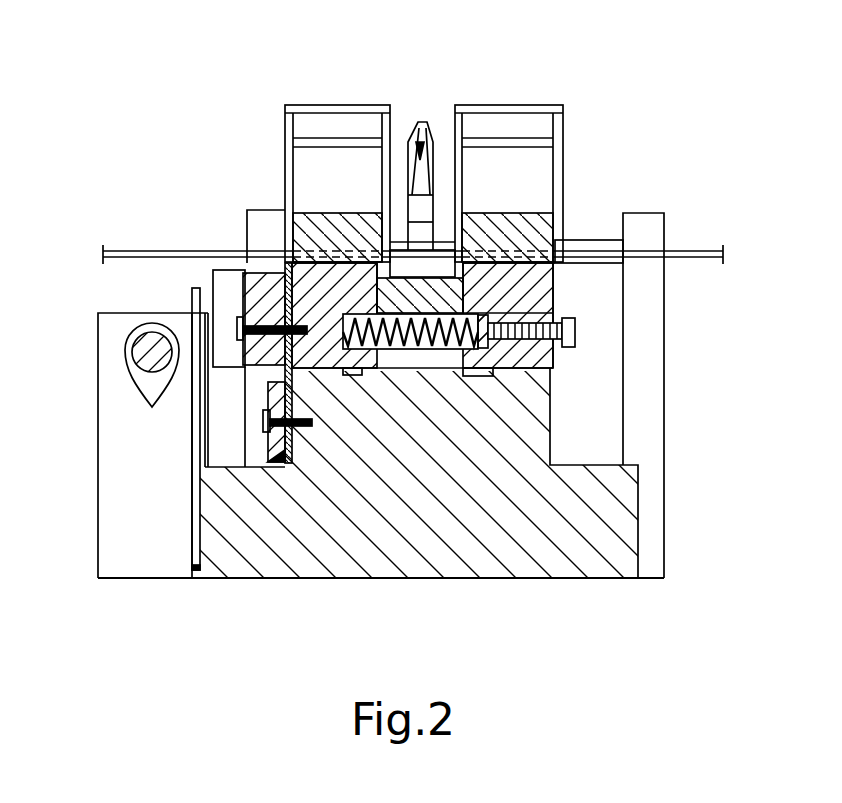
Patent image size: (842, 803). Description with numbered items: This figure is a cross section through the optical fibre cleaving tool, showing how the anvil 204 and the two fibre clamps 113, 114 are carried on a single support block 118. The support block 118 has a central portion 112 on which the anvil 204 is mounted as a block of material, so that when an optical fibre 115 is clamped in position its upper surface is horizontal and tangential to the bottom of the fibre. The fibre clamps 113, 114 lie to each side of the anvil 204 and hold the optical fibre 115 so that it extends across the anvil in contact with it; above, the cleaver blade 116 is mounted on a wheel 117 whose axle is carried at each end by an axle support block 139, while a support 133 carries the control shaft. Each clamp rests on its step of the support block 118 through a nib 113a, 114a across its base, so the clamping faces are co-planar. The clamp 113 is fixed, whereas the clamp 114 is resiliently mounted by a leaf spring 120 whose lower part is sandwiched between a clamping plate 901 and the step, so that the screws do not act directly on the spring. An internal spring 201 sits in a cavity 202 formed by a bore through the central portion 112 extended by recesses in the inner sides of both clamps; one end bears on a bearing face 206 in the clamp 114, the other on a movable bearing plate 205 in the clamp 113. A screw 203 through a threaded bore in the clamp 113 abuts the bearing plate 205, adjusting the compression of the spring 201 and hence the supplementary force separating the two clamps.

The central portion 112 is at (468, 300).
The fibre clamp 113 is at (548, 285).
The nib 113a is at (598, 574).
The fibre clamp 114 is at (357, 270).
The nib 114a is at (340, 372).
The optical fibre 115 is at (695, 251).
The cleaver blade 116 is at (421, 153).
The wheel 117 is at (415, 222).
The support block 118 is at (490, 493).
The leaf spring 120 is at (288, 448).
The support 133 is at (115, 403).
The axle support block 139 is at (265, 237).
The internal spring 201 is at (438, 352).
The cavity 202 is at (462, 352).
The screw 203 is at (575, 335).
The anvil 204 is at (420, 298).
The bearing plate 205 is at (553, 232).
The bearing face 206 is at (295, 282).
The clamping plate 901 is at (277, 395).